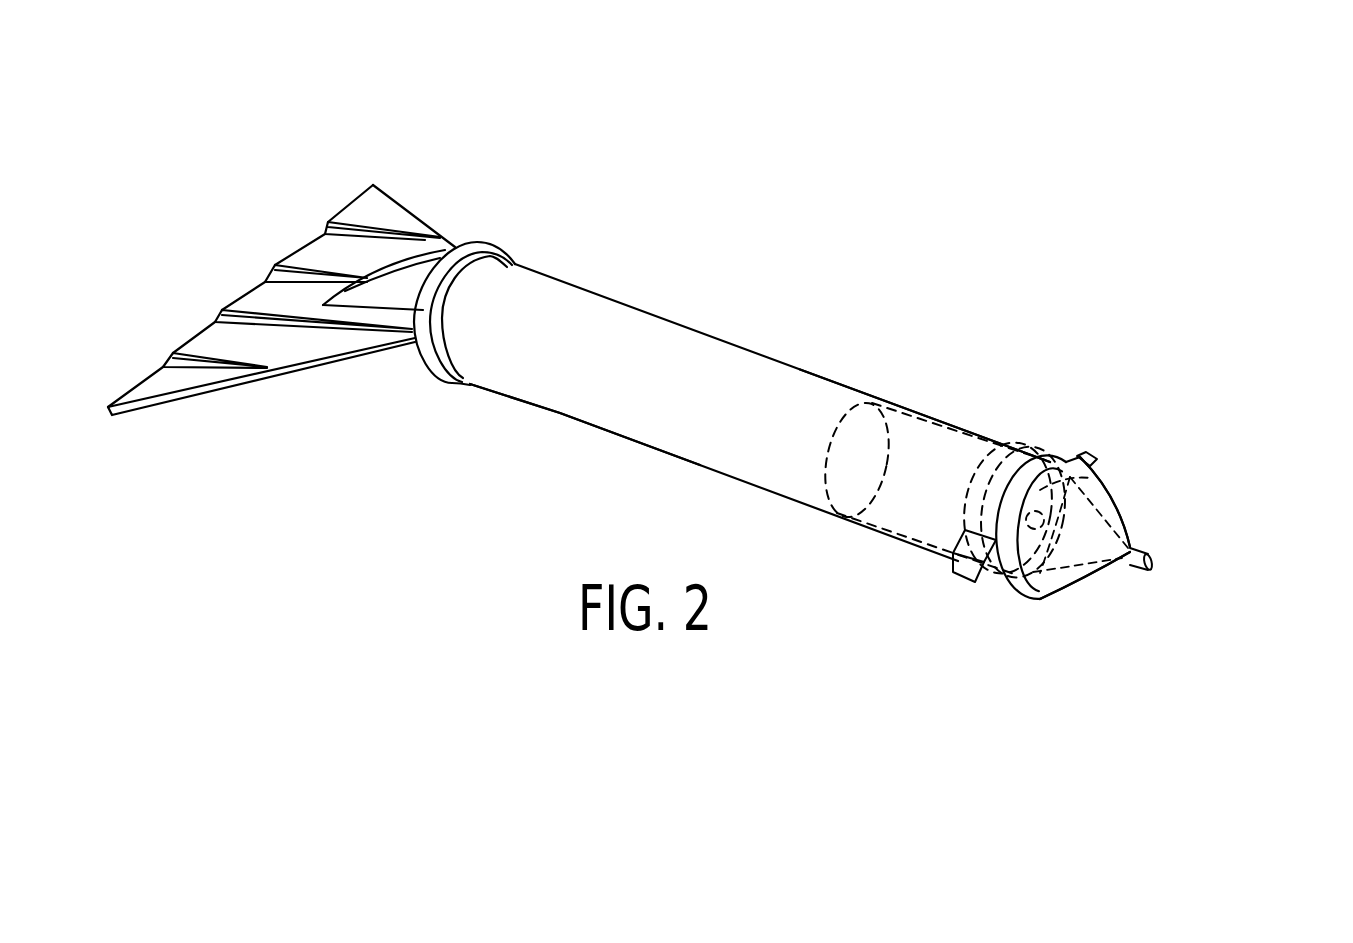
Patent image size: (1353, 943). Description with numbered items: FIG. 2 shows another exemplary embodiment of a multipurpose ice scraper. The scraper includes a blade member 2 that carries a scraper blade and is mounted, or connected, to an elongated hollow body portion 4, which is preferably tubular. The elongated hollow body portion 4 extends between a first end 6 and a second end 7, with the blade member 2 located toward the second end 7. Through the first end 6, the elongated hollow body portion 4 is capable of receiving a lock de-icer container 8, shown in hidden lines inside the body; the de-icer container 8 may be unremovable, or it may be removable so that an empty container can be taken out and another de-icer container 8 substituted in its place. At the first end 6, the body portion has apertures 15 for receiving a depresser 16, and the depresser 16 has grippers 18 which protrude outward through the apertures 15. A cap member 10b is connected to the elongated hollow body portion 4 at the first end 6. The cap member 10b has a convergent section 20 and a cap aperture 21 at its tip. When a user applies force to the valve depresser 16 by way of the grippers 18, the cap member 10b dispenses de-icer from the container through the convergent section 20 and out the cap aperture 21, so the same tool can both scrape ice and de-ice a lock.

The blade member 2 is at (377, 210).
The elongated hollow body portion 4 is at (760, 412).
The first end 6 is at (883, 400).
The second end 7 is at (515, 400).
The lock de-icer container 8 is at (945, 490).
The cap member 10b is at (1118, 490).
The apertures 15 is at (998, 568).
The depresser 16 is at (1033, 550).
The grippers 18 is at (1087, 455).
The convergent section 20 is at (1106, 526).
The cap aperture 21 is at (1152, 562).